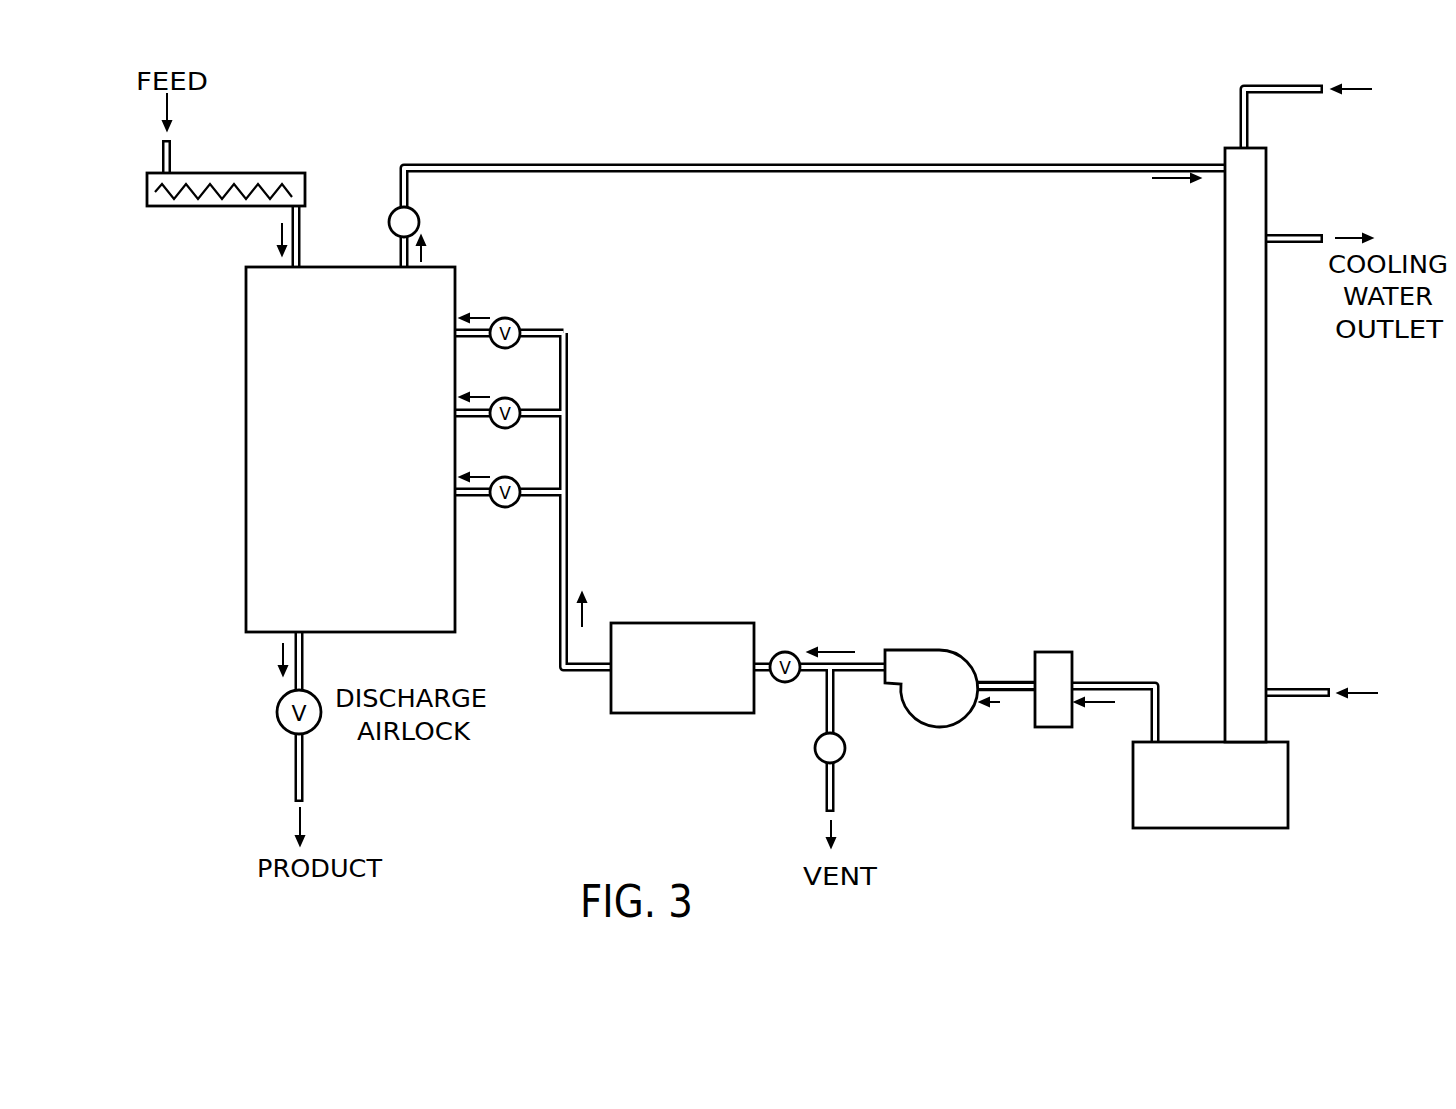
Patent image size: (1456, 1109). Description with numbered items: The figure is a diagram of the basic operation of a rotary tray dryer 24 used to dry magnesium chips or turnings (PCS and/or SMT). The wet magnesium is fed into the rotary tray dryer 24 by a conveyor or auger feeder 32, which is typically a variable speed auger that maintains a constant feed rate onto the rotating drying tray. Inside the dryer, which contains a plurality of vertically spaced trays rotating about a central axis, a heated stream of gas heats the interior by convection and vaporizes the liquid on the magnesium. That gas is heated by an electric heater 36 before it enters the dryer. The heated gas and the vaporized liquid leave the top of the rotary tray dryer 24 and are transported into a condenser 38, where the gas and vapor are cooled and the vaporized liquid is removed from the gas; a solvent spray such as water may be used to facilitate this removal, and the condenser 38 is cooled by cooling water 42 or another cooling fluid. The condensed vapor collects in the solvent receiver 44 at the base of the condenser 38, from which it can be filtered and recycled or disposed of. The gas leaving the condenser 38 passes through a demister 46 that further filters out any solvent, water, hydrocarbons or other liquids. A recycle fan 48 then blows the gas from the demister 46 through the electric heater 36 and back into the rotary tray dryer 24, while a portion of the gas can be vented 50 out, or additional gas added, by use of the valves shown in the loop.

The rotary tray dryer 24 is at (245, 443).
The auger feeder 32 is at (245, 187).
The electric heater 36 is at (705, 623).
The condenser 38 is at (1226, 480).
The cooling water 42 is at (1308, 690).
The solvent receiver 44 is at (1230, 829).
The demister 46 is at (1050, 727).
The recycle fan 48 is at (915, 650).
The vent 50 is at (826, 783).